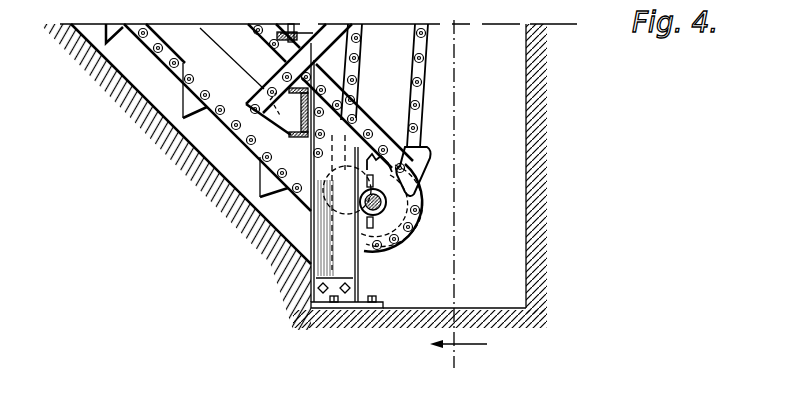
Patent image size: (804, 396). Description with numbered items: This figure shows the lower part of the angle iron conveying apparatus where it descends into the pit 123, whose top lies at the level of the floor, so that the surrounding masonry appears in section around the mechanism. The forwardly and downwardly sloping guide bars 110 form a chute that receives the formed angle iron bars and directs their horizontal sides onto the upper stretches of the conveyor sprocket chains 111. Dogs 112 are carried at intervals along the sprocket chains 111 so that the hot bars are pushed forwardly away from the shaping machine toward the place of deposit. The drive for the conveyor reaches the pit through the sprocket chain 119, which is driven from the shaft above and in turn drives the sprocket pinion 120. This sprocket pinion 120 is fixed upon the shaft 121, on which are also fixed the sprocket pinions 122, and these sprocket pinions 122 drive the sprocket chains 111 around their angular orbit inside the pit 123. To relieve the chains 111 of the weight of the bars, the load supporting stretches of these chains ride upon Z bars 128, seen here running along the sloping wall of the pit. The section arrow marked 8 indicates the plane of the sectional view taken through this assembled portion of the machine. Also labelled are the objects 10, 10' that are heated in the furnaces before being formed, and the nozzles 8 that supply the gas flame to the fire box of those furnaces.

The nozzle 8 is at (467, 344).
The object to be heated 10 is at (284, 79).
The object to be heated 10' is at (313, 80).
The guide bar 110 is at (358, 36).
The conveyor sprocket chain 111 is at (350, 125).
The dog 112 is at (270, 182).
The sprocket chain 119 is at (430, 39).
The sprocket pinion 120 is at (418, 128).
The shaft 121 is at (388, 200).
The sprocket pinion 122 is at (395, 215).
The pit 123 is at (514, 117).
The Z bar 128 is at (243, 47).